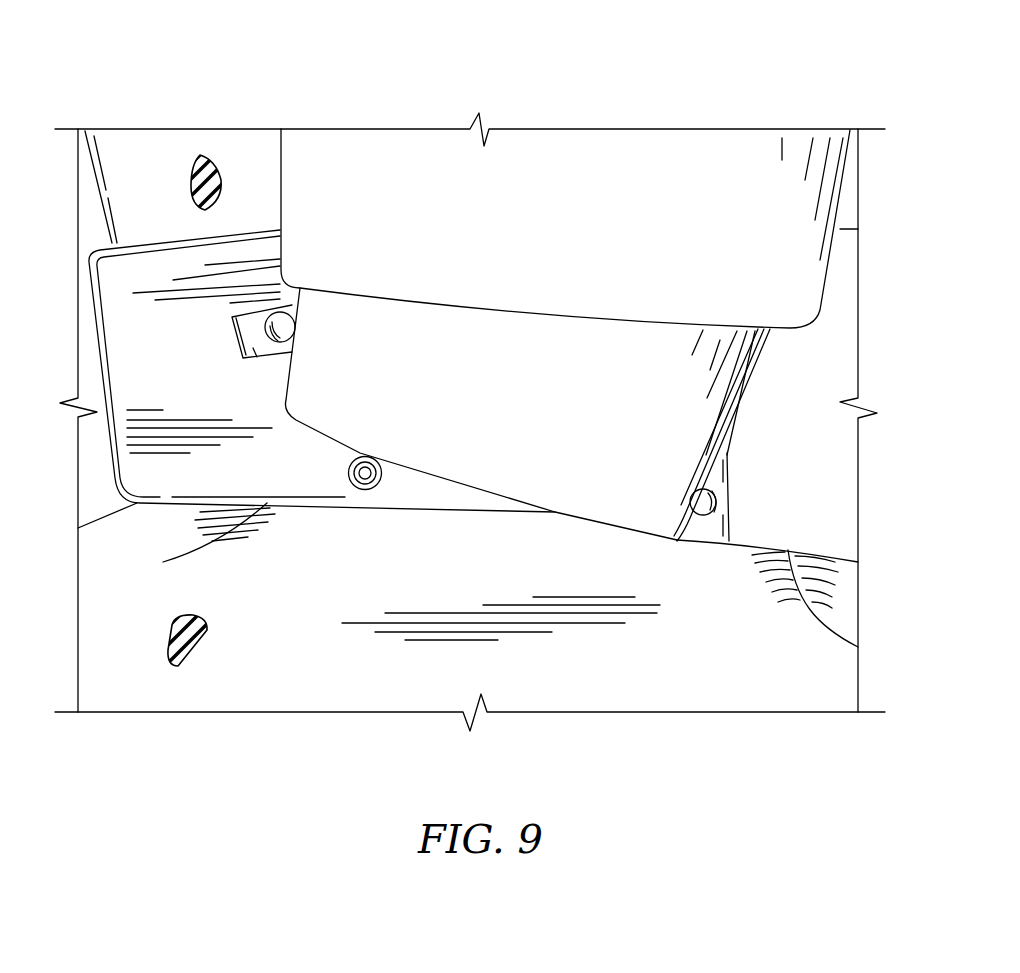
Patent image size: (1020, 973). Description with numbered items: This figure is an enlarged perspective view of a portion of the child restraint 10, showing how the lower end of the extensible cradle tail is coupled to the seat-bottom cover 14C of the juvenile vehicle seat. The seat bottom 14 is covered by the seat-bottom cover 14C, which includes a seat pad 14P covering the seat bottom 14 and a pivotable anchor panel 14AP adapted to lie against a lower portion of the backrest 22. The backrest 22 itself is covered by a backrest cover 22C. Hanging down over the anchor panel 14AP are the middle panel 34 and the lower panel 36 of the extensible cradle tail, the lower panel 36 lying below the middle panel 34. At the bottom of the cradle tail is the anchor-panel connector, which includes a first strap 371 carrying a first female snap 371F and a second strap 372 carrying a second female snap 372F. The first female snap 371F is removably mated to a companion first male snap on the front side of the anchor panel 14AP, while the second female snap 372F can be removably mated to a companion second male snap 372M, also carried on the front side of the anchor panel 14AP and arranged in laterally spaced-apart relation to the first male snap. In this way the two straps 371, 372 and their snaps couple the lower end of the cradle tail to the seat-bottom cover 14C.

The child restraint 10 is at (150, 116).
The backrest 22 is at (205, 157).
The backrest cover 22C is at (132, 187).
The middle panel 34 is at (572, 183).
The lower panel 36 is at (532, 405).
The second strap 372 is at (250, 348).
The second female snap 372F is at (281, 325).
The second male snap 372M is at (366, 490).
The first strap 371 is at (712, 478).
The first female snap 371F is at (703, 501).
The anchor panel 14AP is at (793, 475).
The seat-bottom cover 14C is at (130, 637).
The seat bottom 14 is at (183, 665).
The seat pad 14P is at (710, 695).